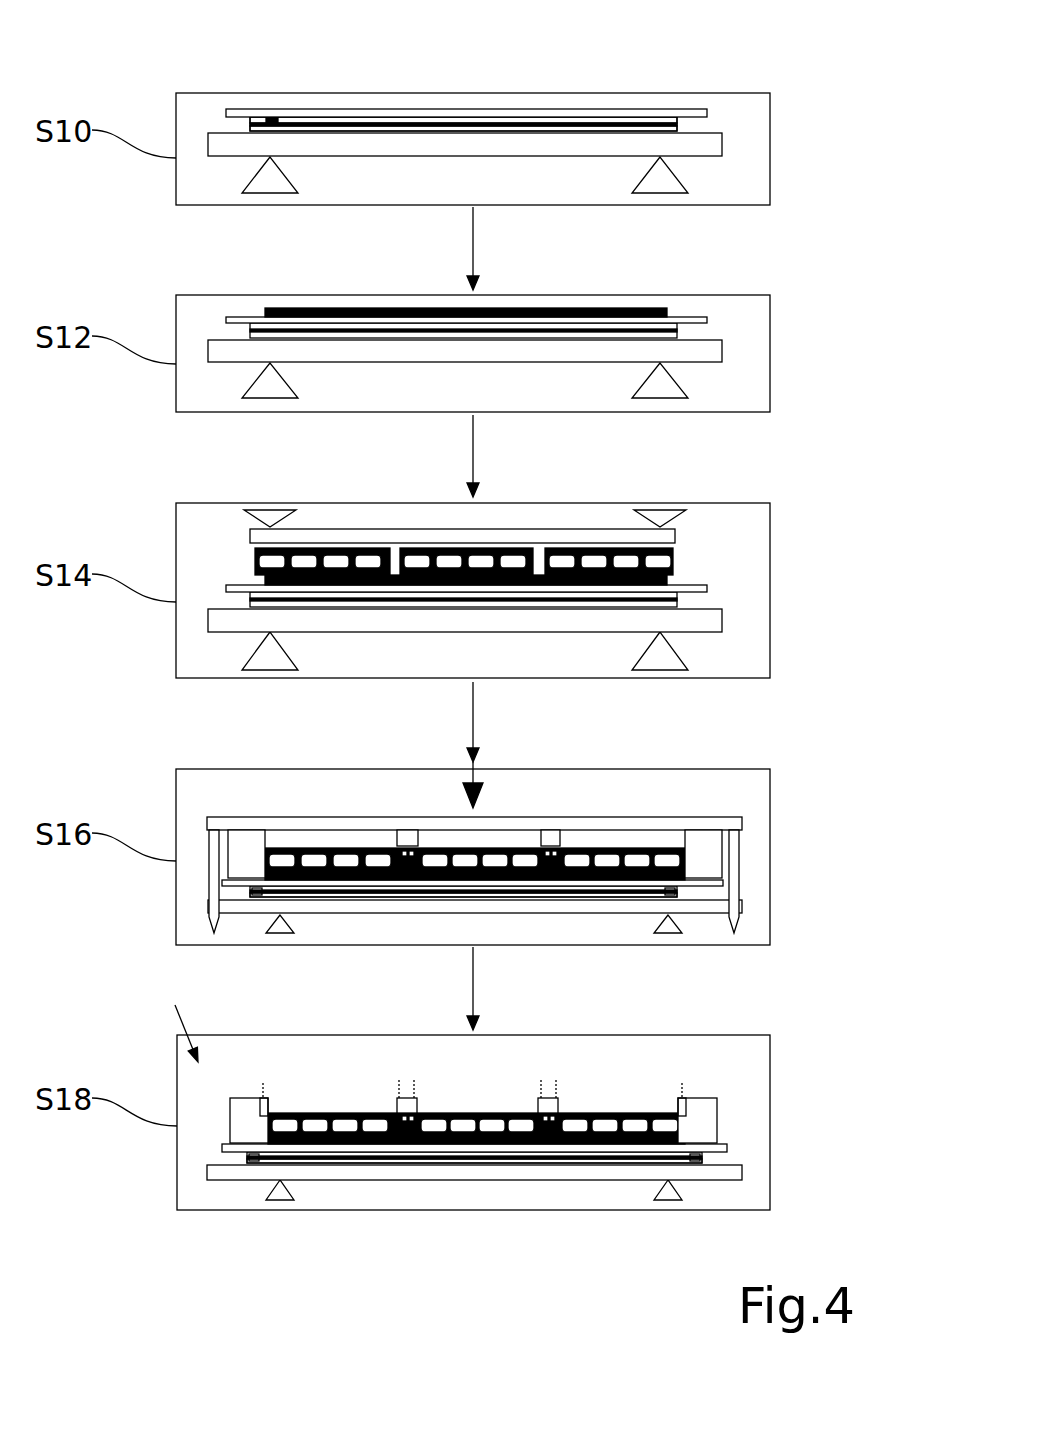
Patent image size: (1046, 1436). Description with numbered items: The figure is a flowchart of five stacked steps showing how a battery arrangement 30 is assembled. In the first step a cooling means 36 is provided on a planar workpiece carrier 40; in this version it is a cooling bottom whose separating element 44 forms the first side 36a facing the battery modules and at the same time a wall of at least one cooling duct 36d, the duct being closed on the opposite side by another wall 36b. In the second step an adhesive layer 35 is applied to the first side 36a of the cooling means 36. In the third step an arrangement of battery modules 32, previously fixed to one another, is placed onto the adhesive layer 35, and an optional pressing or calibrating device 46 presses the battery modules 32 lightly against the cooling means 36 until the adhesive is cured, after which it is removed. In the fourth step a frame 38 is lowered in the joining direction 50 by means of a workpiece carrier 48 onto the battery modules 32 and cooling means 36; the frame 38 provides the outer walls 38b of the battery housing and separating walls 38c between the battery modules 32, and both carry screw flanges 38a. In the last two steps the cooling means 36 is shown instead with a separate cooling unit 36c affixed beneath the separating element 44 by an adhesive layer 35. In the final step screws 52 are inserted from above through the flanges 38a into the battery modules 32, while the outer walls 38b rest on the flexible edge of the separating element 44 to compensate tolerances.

The battery arrangement 30 is at (174, 1018).
The battery module 32 is at (350, 548).
The adhesive layer 35 is at (275, 308).
The cooling means 36 is at (641, 106).
The first side of the cooling means 36a is at (565, 112).
The wall 36b is at (357, 128).
The cooling unit 36c is at (578, 892).
The cooling duct 36d is at (277, 119).
The frame 38 is at (472, 923).
The screw flange 38a is at (265, 837).
The outer wall 38b is at (245, 853).
The separating wall 38c is at (400, 837).
The workpiece carrier 40 is at (722, 143).
The separating element 44 is at (700, 109).
The pressing or calibrating device 46 is at (565, 529).
The workpiece carrier 48 is at (330, 817).
The joining direction 50 is at (478, 778).
The screw 52 is at (263, 1083).